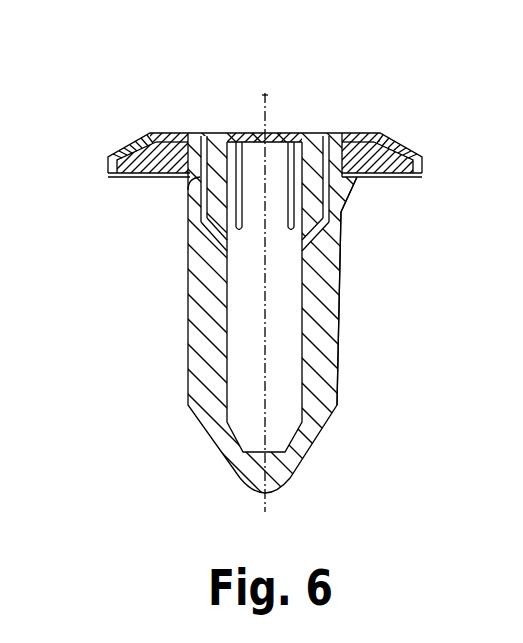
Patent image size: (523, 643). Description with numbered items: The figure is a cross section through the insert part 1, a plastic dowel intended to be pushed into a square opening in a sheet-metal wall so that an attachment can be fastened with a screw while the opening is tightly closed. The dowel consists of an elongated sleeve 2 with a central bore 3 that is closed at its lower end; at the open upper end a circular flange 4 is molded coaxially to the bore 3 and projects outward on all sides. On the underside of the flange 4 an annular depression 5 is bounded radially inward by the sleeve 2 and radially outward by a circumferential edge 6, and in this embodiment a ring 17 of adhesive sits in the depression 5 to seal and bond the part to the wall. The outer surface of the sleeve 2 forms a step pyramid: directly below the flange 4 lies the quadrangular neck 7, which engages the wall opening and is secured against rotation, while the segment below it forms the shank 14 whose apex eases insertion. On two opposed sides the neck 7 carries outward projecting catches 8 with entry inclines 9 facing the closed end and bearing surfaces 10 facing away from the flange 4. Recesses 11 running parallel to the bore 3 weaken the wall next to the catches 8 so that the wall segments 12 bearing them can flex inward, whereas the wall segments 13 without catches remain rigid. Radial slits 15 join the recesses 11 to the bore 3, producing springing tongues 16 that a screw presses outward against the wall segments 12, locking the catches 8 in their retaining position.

The insert part 1 is at (88, 108).
The sleeve 2 is at (190, 303).
The bore 3 is at (240, 347).
The flange 4 is at (143, 137).
The annular depression 5 is at (142, 178).
The circumferential edge 6 is at (108, 173).
The neck 7 is at (170, 178).
The catches 8 is at (185, 200).
The entry inclines 9 is at (352, 212).
The bearing surfaces 10 is at (347, 180).
The recesses 11 is at (203, 133).
The wall segments 12 is at (190, 133).
The wall segments 13 is at (275, 133).
The shank 14 is at (338, 352).
The radial slits 15 is at (247, 133).
The tongues 16 is at (220, 133).
The ring of adhesive 17 is at (388, 153).